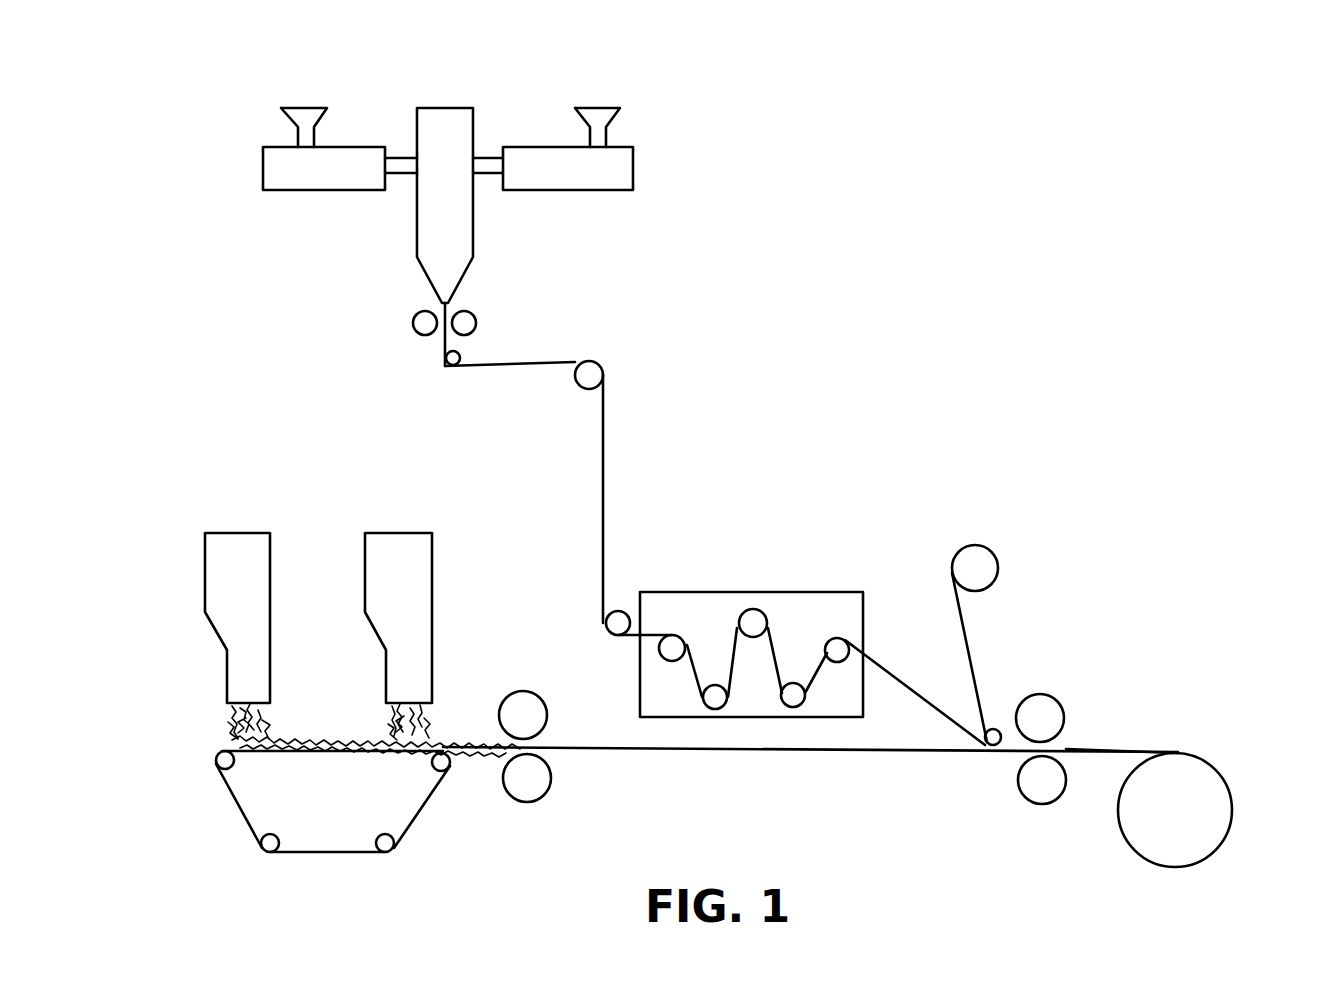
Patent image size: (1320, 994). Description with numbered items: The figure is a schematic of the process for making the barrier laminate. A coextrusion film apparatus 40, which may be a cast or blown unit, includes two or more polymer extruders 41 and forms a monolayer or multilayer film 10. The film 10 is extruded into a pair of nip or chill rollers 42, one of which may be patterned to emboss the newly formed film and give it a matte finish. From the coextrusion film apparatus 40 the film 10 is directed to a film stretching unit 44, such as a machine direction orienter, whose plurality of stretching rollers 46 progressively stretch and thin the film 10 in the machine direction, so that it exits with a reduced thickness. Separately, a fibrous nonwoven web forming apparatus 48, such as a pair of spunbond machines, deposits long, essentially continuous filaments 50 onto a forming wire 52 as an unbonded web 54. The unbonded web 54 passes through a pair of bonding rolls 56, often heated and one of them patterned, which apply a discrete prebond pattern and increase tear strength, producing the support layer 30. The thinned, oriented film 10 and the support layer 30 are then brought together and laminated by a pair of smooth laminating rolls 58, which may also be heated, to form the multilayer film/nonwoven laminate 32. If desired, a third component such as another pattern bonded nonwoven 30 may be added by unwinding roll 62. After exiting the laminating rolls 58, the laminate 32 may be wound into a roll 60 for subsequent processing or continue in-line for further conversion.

The multilayer film 10 is at (508, 367).
The support layer 30 is at (632, 748).
The multilayer film/nonwoven laminate 32 is at (1130, 750).
The coextrusion film apparatus 40 is at (445, 125).
The polymer extruders 41 is at (258, 162).
The nip or chill rollers 42 is at (412, 322).
The film stretching unit 44 is at (787, 592).
The stretching rollers 46 is at (672, 636).
The fibrous nonwoven web forming apparatus 48 is at (237, 537).
The continuous filaments 50 is at (388, 722).
The forming wire 52 is at (338, 858).
The unbonded web 54 is at (483, 735).
The bonding rolls 56 is at (536, 690).
The laminating rolls 58 is at (1053, 697).
The roll 60 is at (1215, 845).
The roll 62 is at (992, 552).